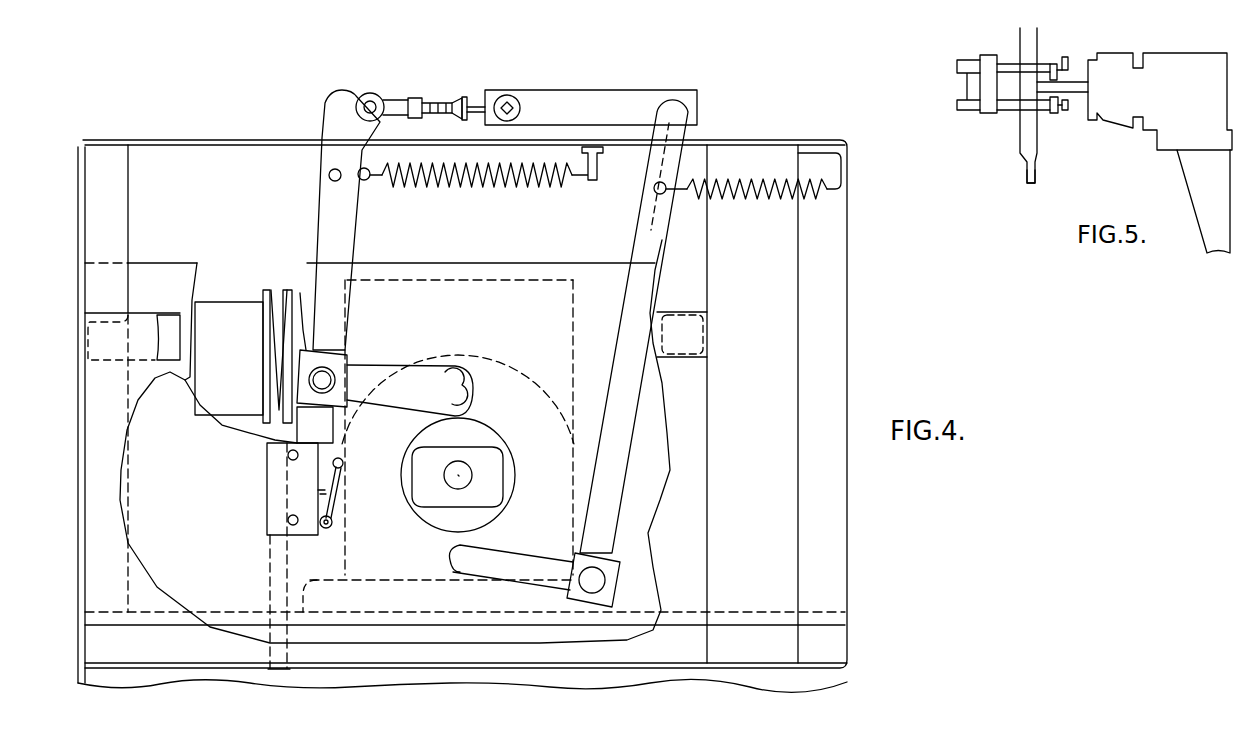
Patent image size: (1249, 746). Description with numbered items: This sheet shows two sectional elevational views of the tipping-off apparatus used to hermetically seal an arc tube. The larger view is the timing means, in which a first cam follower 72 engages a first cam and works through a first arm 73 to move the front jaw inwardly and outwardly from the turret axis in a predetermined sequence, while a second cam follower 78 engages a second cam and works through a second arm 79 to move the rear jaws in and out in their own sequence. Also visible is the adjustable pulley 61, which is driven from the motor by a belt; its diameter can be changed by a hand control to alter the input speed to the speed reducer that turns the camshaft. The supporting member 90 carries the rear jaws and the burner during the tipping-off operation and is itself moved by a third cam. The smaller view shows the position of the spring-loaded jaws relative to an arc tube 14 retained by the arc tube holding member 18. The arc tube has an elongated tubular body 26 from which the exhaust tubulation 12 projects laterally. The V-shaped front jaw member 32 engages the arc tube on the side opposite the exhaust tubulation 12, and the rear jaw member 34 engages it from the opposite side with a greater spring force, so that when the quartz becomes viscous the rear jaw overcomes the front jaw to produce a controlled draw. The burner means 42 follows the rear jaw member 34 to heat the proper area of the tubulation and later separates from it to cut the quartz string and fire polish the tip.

In FIG. 5, the exhaust tubulation 12 is at (1077, 93).
In FIG. 5, the arc tube 14 is at (1020, 138).
In FIG. 5, the arc tube holding member 18 is at (1170, 63).
In FIG. 5, the tubular body 26 is at (1026, 167).
In FIG. 5, the front jaw member 32 is at (980, 58).
In FIG. 5, the rear jaw member 34 is at (1055, 113).
In FIG. 5, the burner means 42 is at (1067, 57).
In FIG. 4, the adjustable pulley 61 is at (270, 290).
In FIG. 4, the first cam follower 72 is at (473, 367).
In FIG. 4, the first arm 73 is at (320, 202).
In FIG. 4, the second cam follower 78 is at (450, 556).
In FIG. 4, the second arm 79 is at (613, 476).
In FIG. 4, the support member 90 is at (601, 98).
In FIG. 5, the support member 90 is at (992, 104).